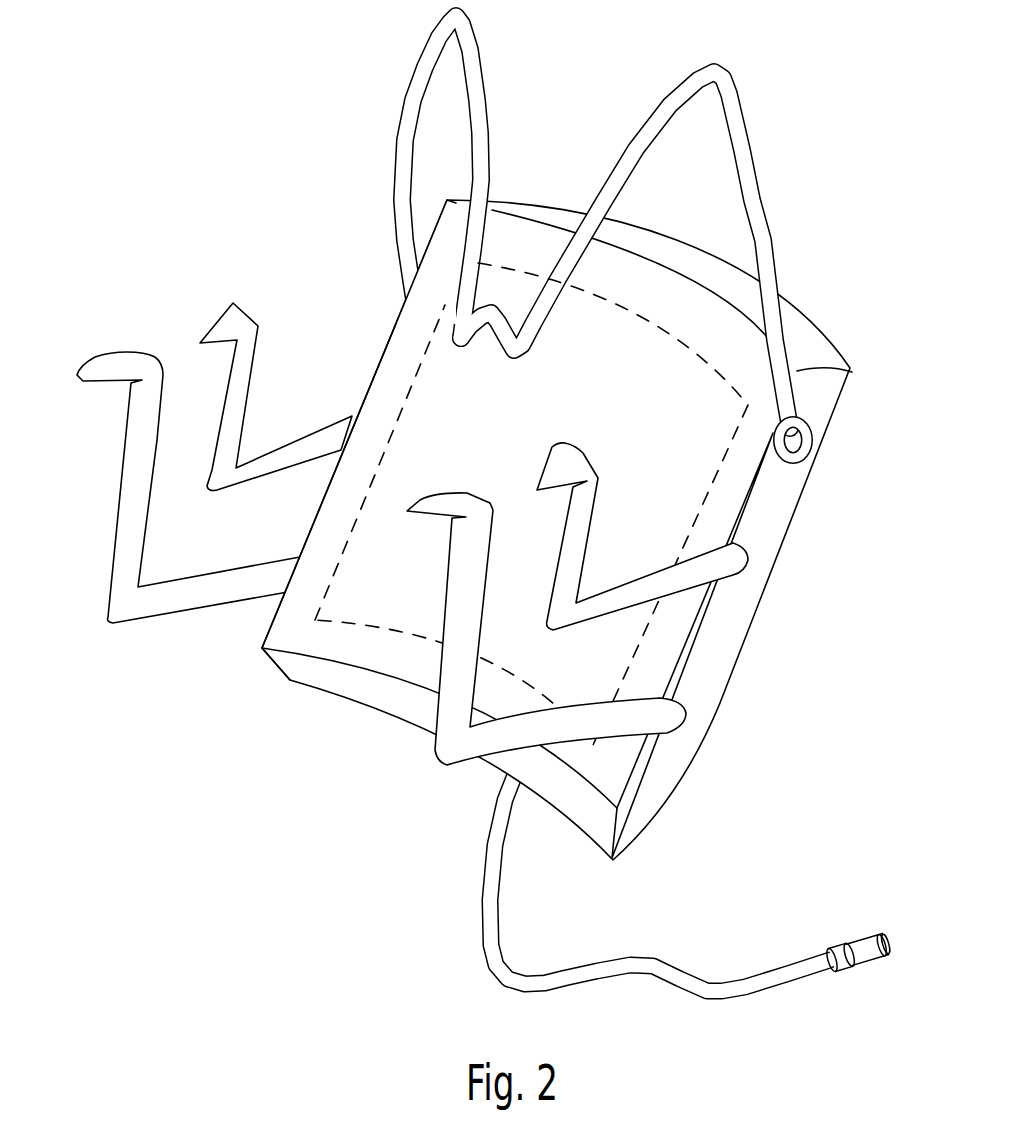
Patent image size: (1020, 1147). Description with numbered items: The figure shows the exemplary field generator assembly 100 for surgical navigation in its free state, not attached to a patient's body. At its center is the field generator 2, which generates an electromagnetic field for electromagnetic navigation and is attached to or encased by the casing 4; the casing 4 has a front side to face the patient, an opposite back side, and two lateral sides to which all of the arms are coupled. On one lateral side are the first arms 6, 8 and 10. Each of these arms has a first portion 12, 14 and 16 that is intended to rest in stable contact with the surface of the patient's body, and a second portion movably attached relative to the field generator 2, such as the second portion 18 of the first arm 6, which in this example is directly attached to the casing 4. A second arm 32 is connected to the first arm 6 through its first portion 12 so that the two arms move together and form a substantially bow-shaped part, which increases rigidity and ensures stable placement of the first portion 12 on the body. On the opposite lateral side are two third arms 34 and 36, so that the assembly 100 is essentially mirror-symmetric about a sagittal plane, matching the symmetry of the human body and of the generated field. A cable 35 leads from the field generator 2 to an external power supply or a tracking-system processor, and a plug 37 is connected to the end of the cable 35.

The field generator assembly 100 is at (575, 438).
The field generator 2 is at (648, 644).
The casing 4 is at (827, 470).
The first arm 6 is at (775, 251).
The first arm 8 is at (690, 578).
The first arm 10 is at (595, 710).
The first portion 12 is at (713, 338).
The first portion 14 is at (701, 491).
The first portion 16 is at (301, 593).
The second portion 18 is at (815, 428).
The second arm 32 is at (398, 144).
The third arm 34 is at (288, 452).
The cable 35 is at (712, 987).
The third arm 36 is at (130, 451).
The plug 37 is at (857, 947).